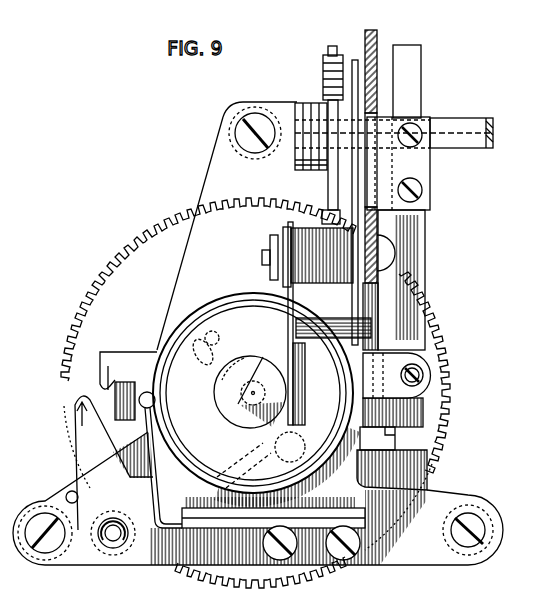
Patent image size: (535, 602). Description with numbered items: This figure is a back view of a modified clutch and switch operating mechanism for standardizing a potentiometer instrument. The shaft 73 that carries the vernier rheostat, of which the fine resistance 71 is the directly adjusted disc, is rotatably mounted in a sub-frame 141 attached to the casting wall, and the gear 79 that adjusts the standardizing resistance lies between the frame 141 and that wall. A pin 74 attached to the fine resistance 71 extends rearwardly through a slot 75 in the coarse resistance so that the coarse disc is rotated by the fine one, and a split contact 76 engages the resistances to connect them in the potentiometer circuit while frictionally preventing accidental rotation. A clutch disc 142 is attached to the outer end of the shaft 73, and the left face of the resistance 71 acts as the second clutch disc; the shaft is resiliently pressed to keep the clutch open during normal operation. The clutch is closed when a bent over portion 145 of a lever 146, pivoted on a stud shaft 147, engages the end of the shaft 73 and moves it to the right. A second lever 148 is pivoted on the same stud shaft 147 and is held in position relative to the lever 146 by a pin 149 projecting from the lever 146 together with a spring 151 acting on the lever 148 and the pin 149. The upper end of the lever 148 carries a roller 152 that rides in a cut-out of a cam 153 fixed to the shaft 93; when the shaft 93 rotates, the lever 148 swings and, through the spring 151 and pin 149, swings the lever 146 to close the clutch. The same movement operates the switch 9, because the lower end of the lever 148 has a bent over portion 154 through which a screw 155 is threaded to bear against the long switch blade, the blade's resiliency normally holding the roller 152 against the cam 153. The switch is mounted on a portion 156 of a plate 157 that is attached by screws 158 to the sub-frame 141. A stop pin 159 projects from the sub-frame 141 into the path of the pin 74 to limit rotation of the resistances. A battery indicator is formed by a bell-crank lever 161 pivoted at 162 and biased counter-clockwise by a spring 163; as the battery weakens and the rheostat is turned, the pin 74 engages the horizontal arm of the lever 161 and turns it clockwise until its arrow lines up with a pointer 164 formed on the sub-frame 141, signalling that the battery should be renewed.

The switch 9 is at (441, 245).
The fine resistance 71 is at (208, 305).
The shaft 73 is at (265, 360).
The pin 74 is at (204, 345).
The slot 75 is at (241, 362).
The split contact 76 is at (155, 455).
The gear 79 is at (105, 264).
The shaft 93 is at (455, 123).
The sub-frame 141 is at (207, 182).
The clutch disc 142 is at (160, 356).
The bent over portion 145 is at (225, 415).
The lever 146 is at (290, 312).
The stud shaft 147 is at (270, 255).
The second lever 148 is at (354, 62).
The pin 149 is at (300, 346).
The spring 151 is at (320, 218).
The roller 152 is at (323, 62).
The cam 153 is at (330, 47).
The bent over portion 154 is at (430, 362).
The screw 155 is at (423, 375).
The portion 156 is at (430, 170).
The plate 157 is at (372, 34).
The screws 158 is at (400, 437).
The pin 159 is at (297, 437).
The bell-crank lever 161 is at (70, 445).
The pivot 162 is at (115, 548).
The spring 163 is at (60, 560).
The pointer 164 is at (100, 372).